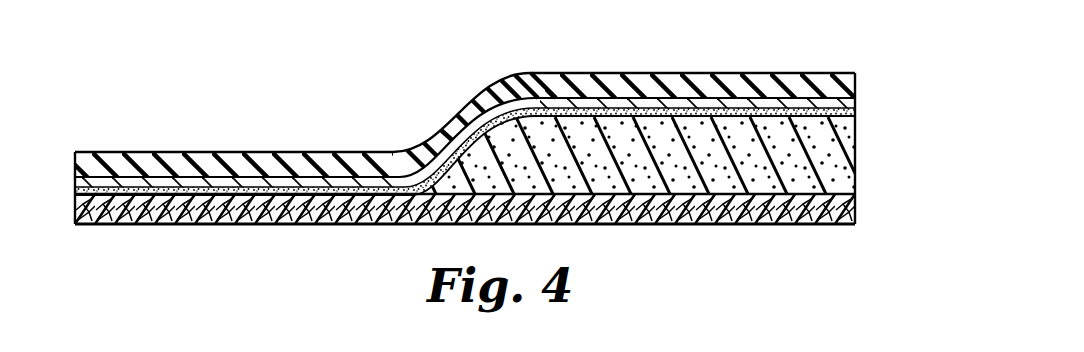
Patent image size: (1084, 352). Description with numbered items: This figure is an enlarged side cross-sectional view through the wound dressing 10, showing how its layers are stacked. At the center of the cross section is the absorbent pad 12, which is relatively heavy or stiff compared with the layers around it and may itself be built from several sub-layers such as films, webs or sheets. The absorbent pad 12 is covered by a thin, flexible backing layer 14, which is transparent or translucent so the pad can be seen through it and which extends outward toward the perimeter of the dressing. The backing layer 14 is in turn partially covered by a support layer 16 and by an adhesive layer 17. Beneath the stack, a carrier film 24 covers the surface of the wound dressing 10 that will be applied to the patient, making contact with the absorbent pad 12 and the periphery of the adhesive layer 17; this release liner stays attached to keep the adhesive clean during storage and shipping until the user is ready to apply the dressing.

The wound dressing 10 is at (357, 72).
The absorbent pad 12 is at (850, 165).
The backing layer 14 is at (585, 103).
The support layer 16 is at (667, 83).
The adhesive layer 17 is at (850, 112).
The carrier film 24 is at (676, 212).